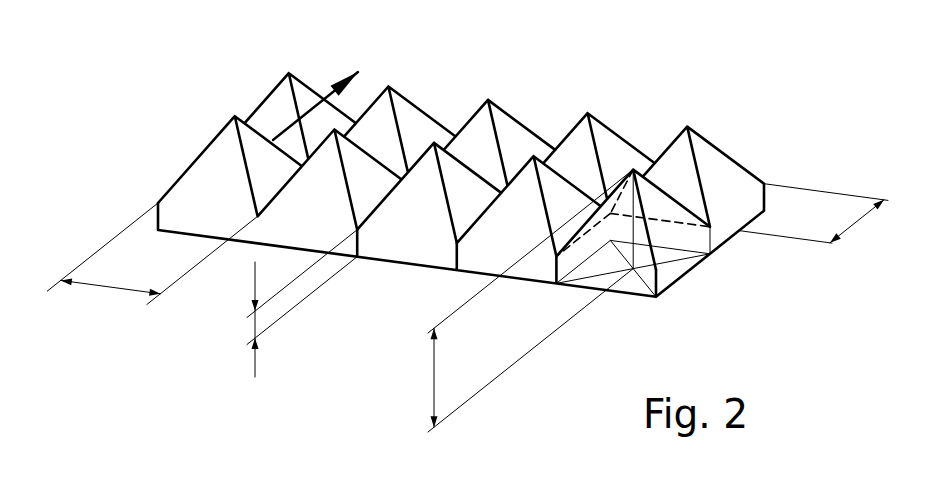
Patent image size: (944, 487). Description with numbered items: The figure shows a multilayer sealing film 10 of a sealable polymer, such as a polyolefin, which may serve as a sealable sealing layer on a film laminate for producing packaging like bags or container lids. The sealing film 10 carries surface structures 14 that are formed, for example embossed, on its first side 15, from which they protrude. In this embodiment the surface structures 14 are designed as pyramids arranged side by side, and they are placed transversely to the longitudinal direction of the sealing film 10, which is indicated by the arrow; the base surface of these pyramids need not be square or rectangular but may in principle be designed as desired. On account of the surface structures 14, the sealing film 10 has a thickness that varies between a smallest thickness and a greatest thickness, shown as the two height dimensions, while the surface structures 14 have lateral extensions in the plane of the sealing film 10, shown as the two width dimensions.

The sealing film 10 is at (350, 363).
The surface structures 14 is at (598, 97).
The first side 15 is at (152, 177).